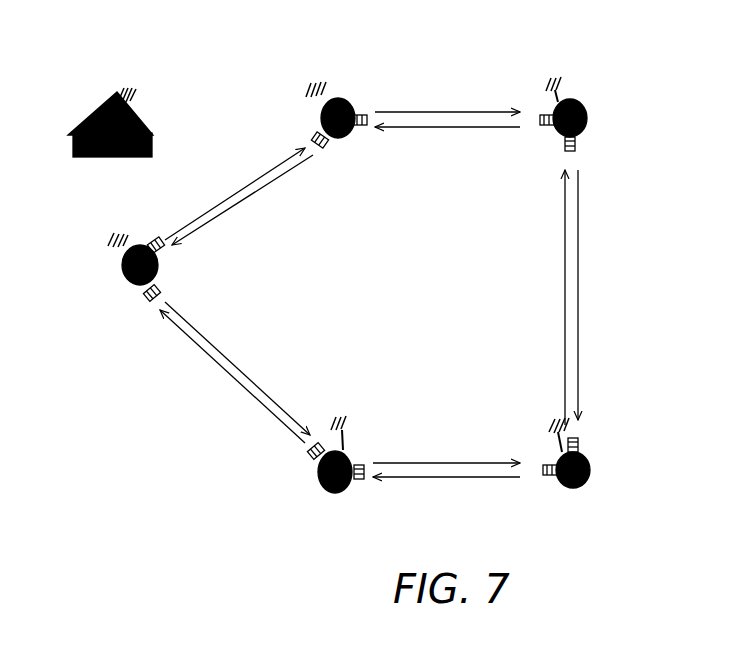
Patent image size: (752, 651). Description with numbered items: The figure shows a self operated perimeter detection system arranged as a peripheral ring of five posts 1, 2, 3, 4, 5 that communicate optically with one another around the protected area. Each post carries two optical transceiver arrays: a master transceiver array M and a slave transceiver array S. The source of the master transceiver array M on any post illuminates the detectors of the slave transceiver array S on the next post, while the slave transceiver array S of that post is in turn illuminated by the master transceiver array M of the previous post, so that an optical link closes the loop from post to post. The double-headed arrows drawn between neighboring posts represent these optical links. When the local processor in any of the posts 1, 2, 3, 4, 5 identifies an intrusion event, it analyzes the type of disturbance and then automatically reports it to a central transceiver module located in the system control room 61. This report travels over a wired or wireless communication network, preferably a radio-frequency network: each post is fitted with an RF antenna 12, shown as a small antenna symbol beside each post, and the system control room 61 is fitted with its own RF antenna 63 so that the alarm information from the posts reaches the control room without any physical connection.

The post 1 is at (320, 477).
The post 2 is at (592, 470).
The post 3 is at (588, 118).
The post 4 is at (343, 102).
The post 5 is at (123, 278).
The RF antenna 12 is at (113, 235).
The system control room 61 is at (98, 157).
The RF antenna 63 is at (137, 95).
The slave transceiver array S is at (152, 238).
The master transceiver array M is at (143, 303).